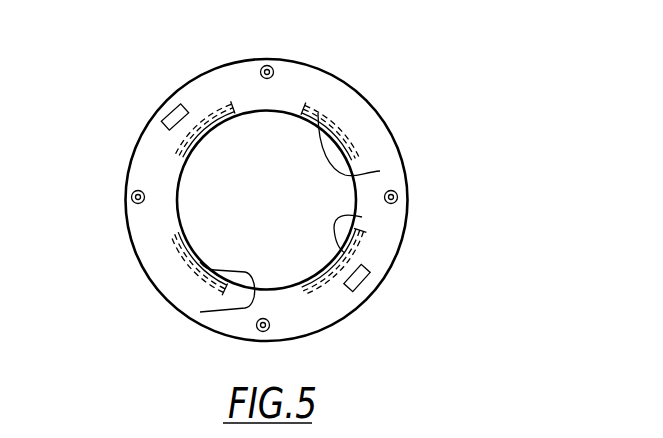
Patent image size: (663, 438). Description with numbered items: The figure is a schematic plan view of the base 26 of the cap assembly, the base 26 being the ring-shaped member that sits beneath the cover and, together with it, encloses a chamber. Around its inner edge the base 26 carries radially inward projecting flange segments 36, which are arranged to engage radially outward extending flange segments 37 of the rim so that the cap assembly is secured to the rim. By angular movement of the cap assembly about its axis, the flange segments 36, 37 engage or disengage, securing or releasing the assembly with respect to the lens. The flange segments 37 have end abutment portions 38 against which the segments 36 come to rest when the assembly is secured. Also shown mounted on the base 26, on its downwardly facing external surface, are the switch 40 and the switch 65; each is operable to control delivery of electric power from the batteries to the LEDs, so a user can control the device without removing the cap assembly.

The base 26 is at (385, 121).
The radially inward projecting flange segments 36 is at (183, 168).
The radially outward extending flange segments 37 is at (214, 119).
The end abutment portions 38 is at (235, 111).
The switch 40 is at (367, 280).
The switch 65 is at (167, 112).